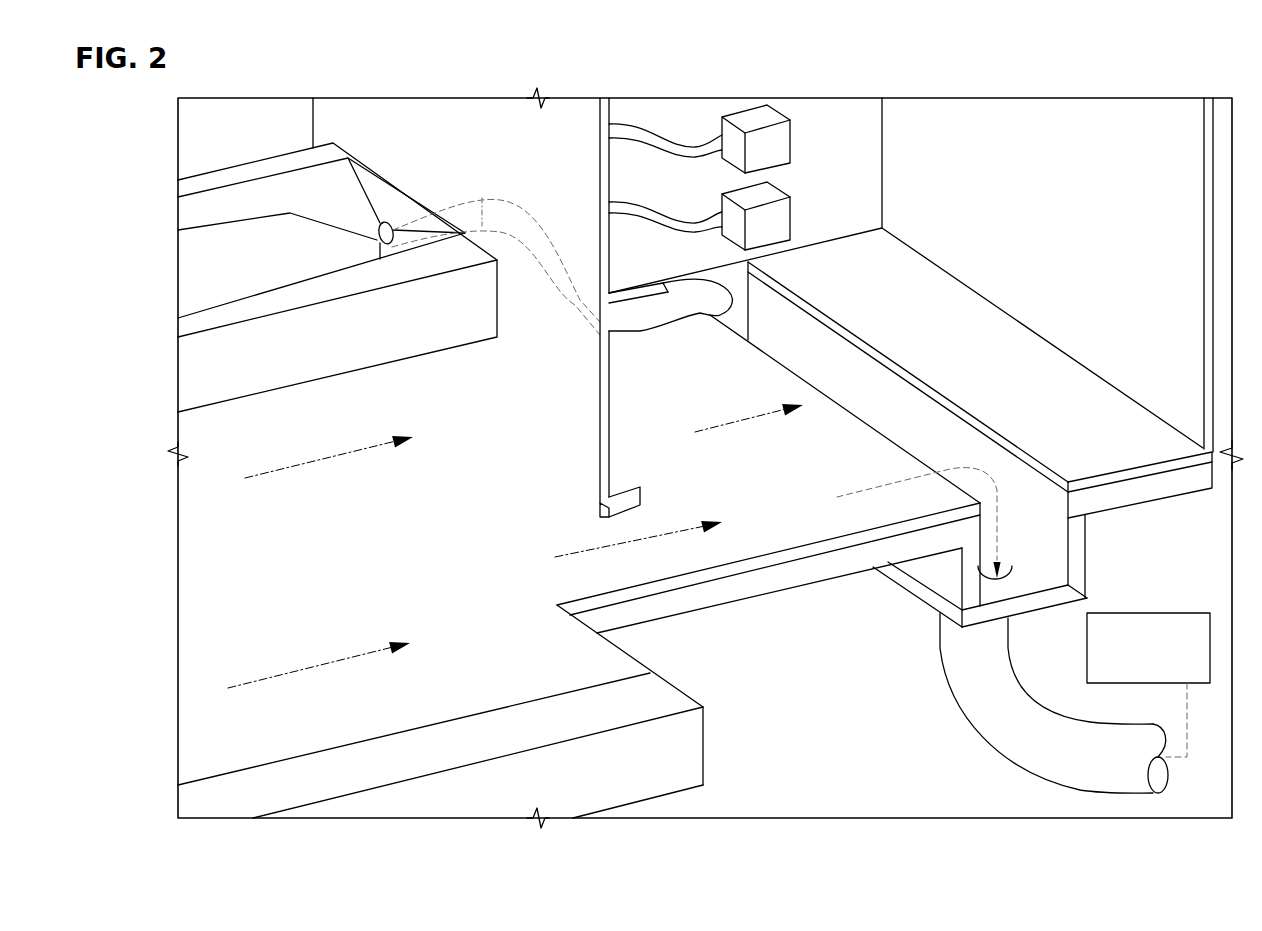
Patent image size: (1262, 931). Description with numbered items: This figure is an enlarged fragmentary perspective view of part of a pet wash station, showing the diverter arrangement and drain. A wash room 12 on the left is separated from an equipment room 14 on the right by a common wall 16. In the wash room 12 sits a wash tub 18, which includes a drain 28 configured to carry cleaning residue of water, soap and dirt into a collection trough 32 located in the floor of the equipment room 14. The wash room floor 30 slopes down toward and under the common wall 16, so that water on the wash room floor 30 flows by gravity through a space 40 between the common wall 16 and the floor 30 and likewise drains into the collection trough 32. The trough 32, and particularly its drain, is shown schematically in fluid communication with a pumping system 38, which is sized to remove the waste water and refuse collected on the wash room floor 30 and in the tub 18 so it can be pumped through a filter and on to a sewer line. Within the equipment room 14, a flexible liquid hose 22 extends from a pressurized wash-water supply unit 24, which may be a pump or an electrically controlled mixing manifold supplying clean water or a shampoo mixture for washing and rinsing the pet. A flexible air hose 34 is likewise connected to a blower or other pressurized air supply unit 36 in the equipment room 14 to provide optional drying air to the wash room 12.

The wash room 12 is at (234, 576).
The equipment room 14 is at (952, 353).
The common wall 16 is at (527, 332).
The wash tub 18 is at (248, 163).
The flexible liquid hose 22 is at (641, 142).
The wash-water supply unit 24 is at (753, 163).
The drain 28 is at (547, 230).
The wash room floor 30 is at (494, 539).
The collection trough 32 is at (838, 350).
The flexible air hose 34 is at (685, 218).
The pressurized air supply unit 36 is at (753, 240).
The pumping system 38 is at (1168, 612).
The space 40 is at (627, 567).